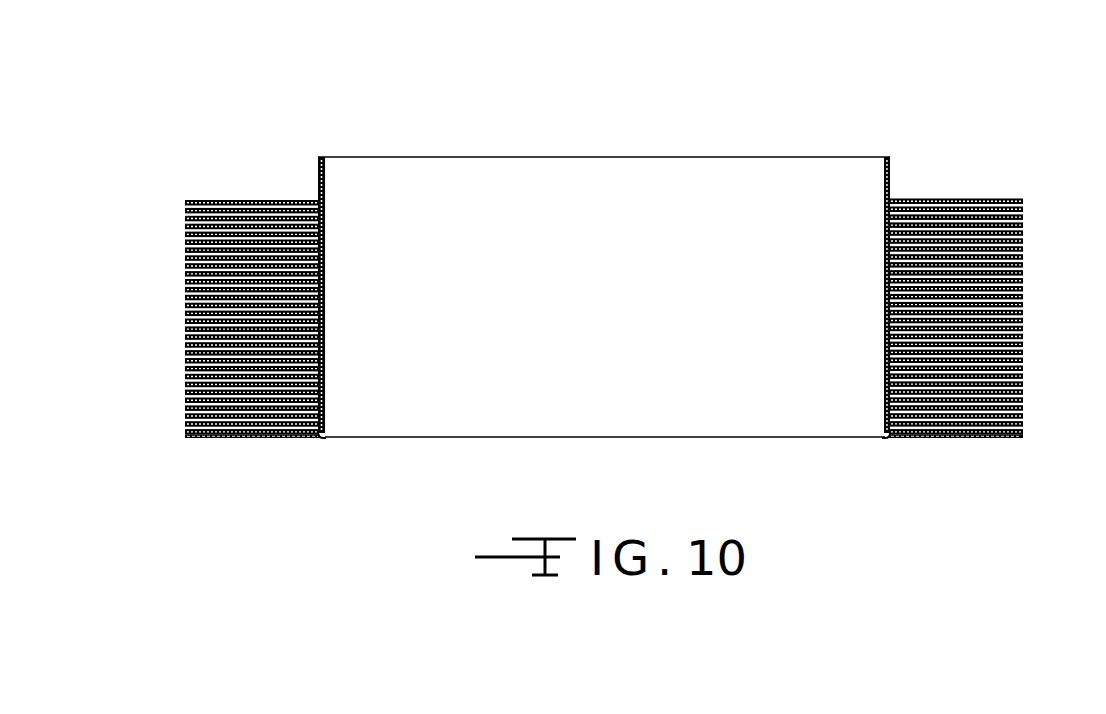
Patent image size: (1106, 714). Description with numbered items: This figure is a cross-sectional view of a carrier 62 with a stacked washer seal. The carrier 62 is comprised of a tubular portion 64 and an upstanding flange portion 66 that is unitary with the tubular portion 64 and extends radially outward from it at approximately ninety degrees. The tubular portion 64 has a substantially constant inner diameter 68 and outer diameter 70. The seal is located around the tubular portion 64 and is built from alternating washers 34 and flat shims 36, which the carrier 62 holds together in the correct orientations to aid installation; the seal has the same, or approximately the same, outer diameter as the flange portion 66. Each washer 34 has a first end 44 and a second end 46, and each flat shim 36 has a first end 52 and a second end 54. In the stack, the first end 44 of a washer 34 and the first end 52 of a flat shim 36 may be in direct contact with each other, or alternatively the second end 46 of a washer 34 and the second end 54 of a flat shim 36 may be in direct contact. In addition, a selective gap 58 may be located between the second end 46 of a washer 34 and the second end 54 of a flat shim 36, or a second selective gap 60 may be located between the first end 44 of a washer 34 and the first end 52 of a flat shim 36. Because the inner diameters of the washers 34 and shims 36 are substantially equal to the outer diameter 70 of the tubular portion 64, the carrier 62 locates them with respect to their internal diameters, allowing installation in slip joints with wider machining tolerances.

The washer 34 is at (1022, 399).
The flat shim 36 is at (1022, 341).
The first end of washer 44 is at (185, 416).
The second end of washer 46 is at (1022, 303).
The first end of flat shim 52 is at (185, 422).
The second end of flat shim 54 is at (1022, 309).
The selective gap 58 is at (996, 317).
The second selective gap 60 is at (198, 325).
The carrier 62 is at (461, 150).
The tubular portion 64 is at (590, 306).
The flange portion 66 is at (260, 440).
The inner diameter 68 is at (327, 281).
The outer diameter 70 is at (892, 177).